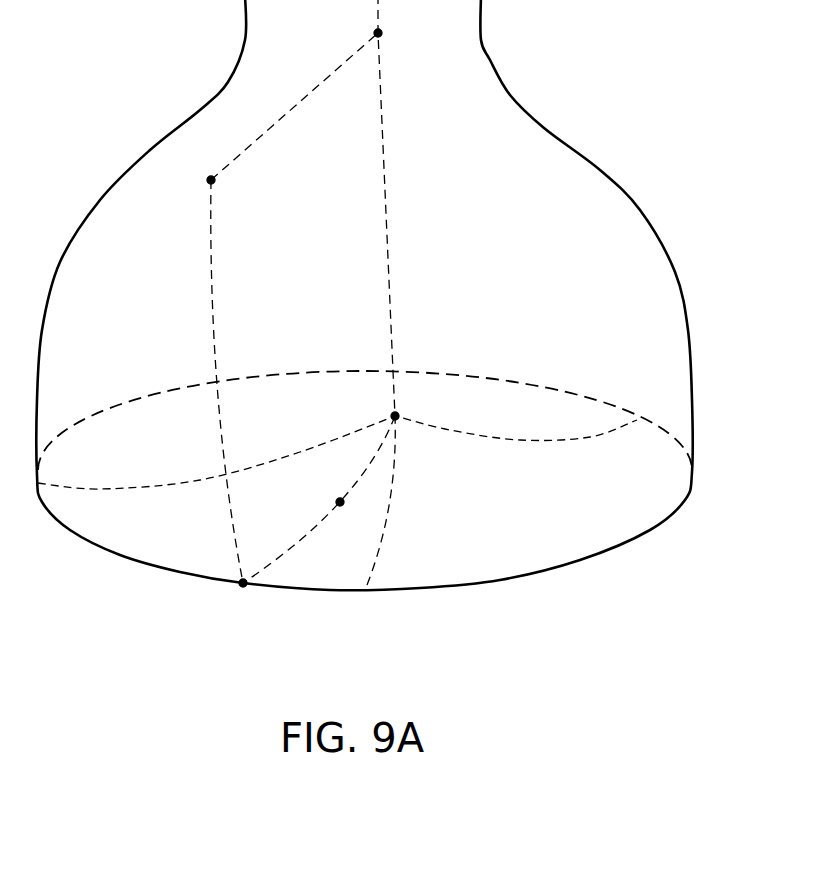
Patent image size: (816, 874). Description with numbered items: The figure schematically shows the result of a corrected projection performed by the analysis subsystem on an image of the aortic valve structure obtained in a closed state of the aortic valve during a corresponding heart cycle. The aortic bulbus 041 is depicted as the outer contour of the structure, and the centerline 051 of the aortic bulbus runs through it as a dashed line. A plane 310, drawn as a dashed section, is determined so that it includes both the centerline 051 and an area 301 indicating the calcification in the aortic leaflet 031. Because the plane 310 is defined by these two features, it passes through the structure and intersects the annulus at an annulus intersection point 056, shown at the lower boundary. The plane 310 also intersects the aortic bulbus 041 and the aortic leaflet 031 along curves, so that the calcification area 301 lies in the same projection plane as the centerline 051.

The aortic bulbus 041 is at (140, 157).
The centerline of the aortic bulbus 051 is at (384, 190).
The plane 310 is at (368, 362).
The aortic leaflet 031 is at (522, 448).
The area indicating the calcification 301 is at (338, 502).
The annulus intersection point 056 is at (243, 583).